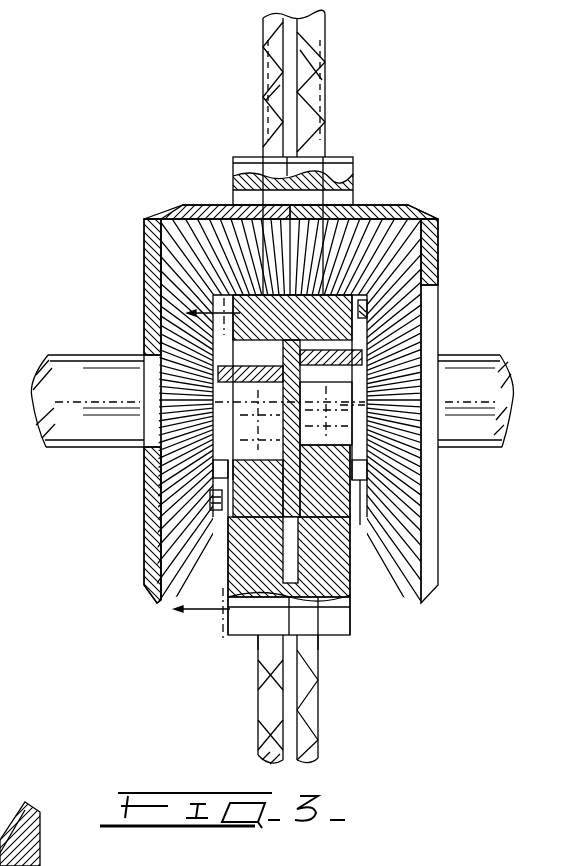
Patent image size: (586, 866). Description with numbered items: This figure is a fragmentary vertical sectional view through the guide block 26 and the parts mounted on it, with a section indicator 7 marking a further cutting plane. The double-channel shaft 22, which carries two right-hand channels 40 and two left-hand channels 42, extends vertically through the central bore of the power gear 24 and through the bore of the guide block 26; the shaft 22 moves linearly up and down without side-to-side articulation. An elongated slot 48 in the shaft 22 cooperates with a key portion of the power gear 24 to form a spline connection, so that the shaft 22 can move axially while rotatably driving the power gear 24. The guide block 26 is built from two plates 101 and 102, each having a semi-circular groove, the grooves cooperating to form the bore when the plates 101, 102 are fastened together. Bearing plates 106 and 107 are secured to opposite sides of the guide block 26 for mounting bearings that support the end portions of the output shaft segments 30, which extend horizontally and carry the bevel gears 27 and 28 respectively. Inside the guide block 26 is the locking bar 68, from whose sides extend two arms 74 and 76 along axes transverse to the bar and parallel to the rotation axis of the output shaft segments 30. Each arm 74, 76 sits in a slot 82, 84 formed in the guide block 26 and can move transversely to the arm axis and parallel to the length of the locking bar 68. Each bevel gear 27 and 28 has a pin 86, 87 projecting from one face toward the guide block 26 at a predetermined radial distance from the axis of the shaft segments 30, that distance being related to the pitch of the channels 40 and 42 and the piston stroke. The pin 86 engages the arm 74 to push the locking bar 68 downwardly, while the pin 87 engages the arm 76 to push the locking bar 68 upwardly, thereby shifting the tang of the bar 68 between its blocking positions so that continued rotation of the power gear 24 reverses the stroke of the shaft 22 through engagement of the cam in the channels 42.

The section line 7- 7 is at (214, 469).
The double-channel shaft 22 is at (315, 103).
The power gear 24 is at (367, 217).
The guide block 26 is at (341, 151).
The bevel gear 27 is at (148, 548).
The bevel gear 28 is at (430, 568).
The output shaft segments 30 is at (92, 390).
The right-hand channels 40 is at (320, 80).
The left-hand channels 42 is at (278, 84).
The elongated slot 48 is at (288, 714).
The locking bar 68 is at (292, 498).
The arm 74 is at (215, 394).
The arm 76 is at (363, 347).
The slot 82 is at (167, 491).
The slot 84 is at (345, 437).
The pin 86 is at (218, 512).
The pin 87 is at (408, 284).
The plate 101 is at (252, 633).
The plate 102 is at (337, 635).
The bearing plate 106 is at (162, 444).
The bearing plate 107 is at (360, 500).